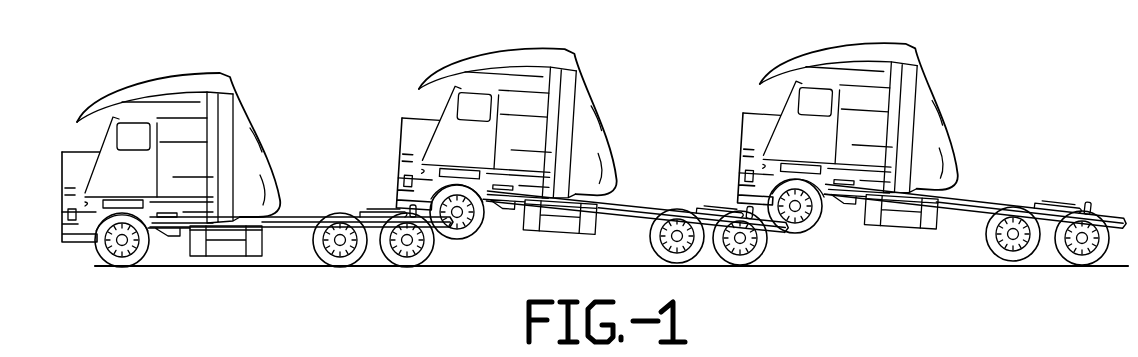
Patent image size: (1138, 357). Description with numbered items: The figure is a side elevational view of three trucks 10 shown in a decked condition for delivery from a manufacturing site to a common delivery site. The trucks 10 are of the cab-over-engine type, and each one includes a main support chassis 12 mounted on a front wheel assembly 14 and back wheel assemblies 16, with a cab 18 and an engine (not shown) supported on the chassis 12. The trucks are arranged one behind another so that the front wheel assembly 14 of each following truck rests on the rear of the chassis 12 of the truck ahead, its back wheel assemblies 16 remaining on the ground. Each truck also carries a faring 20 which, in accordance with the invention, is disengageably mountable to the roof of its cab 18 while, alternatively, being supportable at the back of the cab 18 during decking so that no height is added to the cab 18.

The truck 10 is at (268, 100).
The main support chassis 12 is at (305, 214).
The front wheel assembly 14 is at (124, 268).
The back wheel assemblies 16 is at (334, 268).
The cab 18 is at (73, 168).
The faring 20 is at (250, 150).